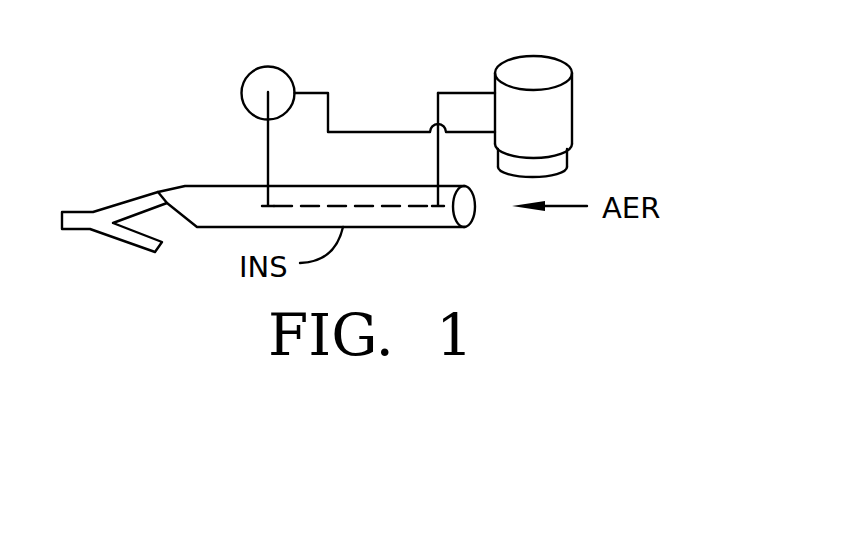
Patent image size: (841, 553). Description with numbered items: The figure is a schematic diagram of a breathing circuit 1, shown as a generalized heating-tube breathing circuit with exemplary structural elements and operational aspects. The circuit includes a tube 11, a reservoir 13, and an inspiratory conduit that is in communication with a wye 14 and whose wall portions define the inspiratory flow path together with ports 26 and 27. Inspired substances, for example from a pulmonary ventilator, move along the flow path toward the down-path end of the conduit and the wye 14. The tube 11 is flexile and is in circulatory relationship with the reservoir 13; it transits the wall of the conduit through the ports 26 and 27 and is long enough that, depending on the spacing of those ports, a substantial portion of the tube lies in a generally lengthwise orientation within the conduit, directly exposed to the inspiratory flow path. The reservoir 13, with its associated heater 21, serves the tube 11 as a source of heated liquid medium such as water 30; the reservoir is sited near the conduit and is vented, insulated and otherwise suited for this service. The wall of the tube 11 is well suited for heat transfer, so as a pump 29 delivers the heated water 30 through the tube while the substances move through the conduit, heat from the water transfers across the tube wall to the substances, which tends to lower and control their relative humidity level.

The circuit 1 is at (123, 78).
The tube 11 is at (266, 140).
The reservoir 13 is at (550, 136).
The wye 14 is at (137, 197).
The heater 21 is at (543, 165).
The port 26 is at (420, 174).
The port 27 is at (252, 175).
The pump 29 is at (246, 69).
The water 30 is at (534, 62).